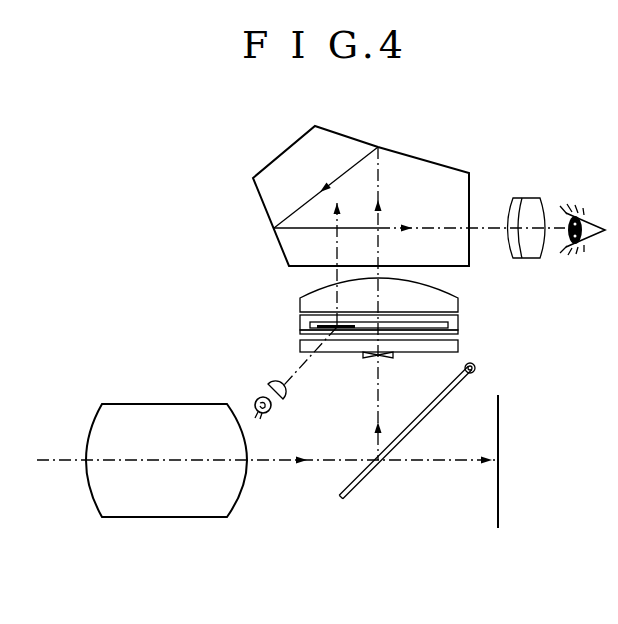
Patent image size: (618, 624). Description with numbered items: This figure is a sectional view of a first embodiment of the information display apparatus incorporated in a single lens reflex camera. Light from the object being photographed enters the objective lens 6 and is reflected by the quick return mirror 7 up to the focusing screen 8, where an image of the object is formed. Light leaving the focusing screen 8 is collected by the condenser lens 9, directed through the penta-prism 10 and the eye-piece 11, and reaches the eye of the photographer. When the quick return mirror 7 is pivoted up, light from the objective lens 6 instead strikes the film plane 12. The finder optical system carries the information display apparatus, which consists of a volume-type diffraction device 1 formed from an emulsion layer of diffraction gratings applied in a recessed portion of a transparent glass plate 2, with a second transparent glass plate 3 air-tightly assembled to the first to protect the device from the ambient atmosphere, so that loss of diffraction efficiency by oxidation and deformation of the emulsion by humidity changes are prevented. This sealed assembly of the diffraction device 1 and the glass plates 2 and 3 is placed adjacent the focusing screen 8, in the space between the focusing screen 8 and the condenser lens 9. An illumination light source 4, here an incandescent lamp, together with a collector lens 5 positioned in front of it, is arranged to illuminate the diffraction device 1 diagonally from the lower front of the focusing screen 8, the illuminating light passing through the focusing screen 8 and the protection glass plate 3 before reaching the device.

The diffraction device 1 is at (310, 325).
The transparent glass plate 2 is at (303, 320).
The second transparent glass plate 3 is at (303, 333).
The illumination light source 4 is at (255, 400).
The collector lens 5 is at (270, 380).
The objective lens 6 is at (226, 500).
The quick return mirror 7 is at (358, 484).
The focusing screen 8 is at (455, 345).
The condenser lens 9 is at (452, 304).
The penta-prism 10 is at (437, 173).
The eye-piece 11 is at (535, 207).
The film plane 12 is at (500, 413).